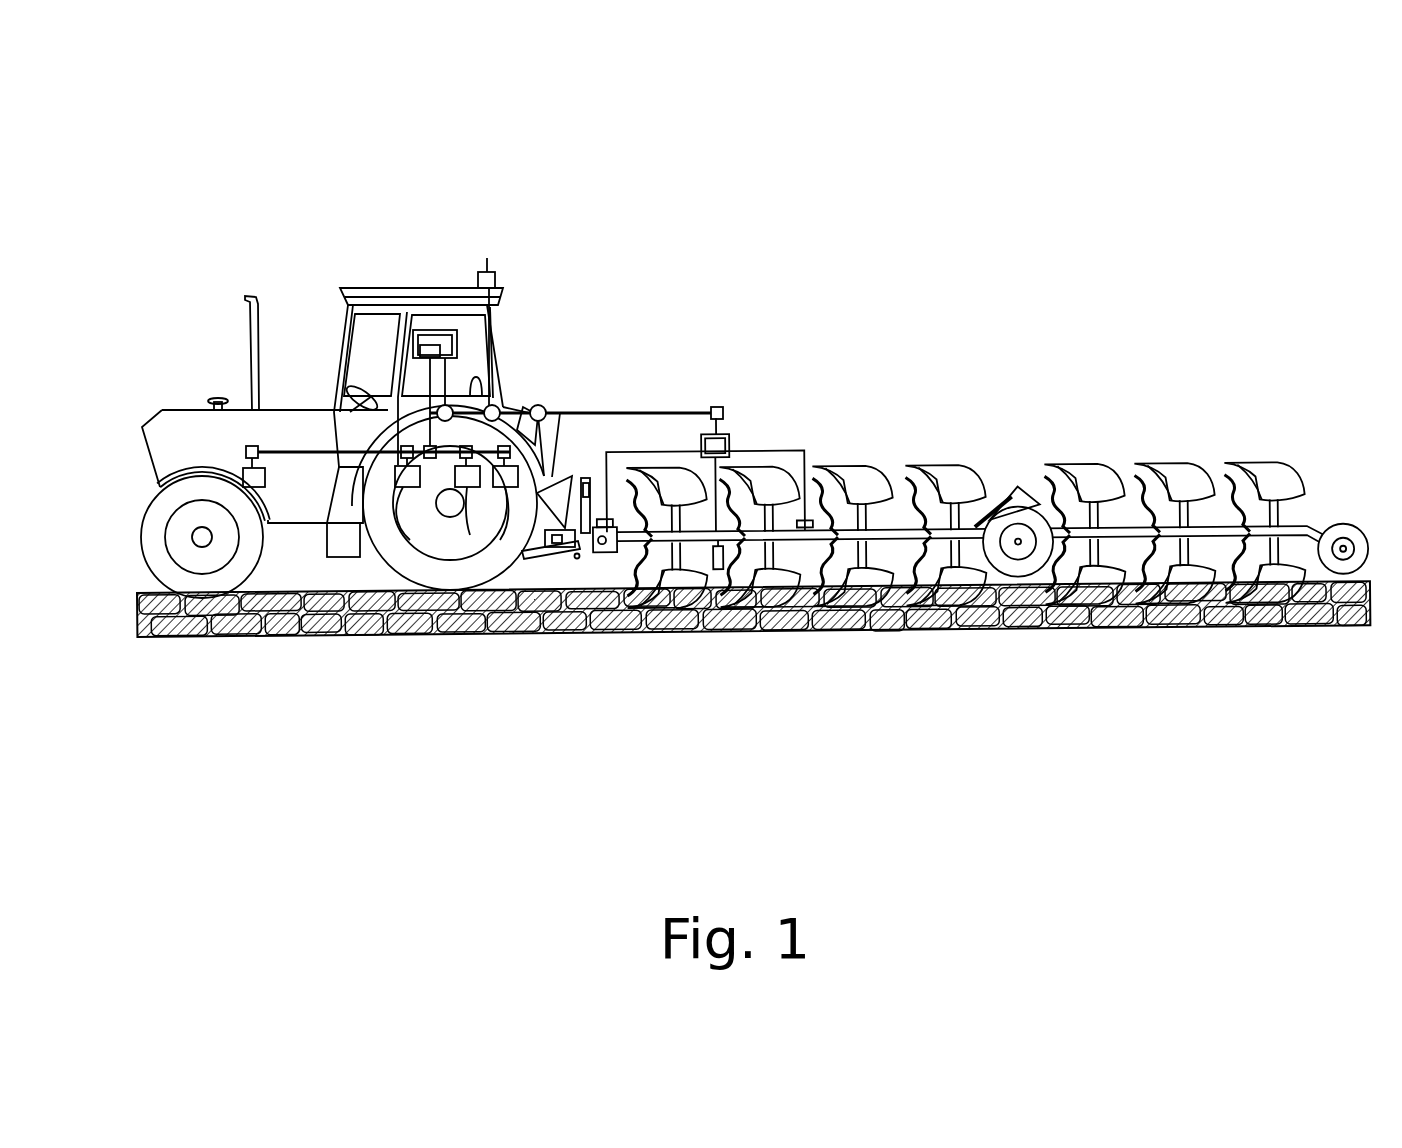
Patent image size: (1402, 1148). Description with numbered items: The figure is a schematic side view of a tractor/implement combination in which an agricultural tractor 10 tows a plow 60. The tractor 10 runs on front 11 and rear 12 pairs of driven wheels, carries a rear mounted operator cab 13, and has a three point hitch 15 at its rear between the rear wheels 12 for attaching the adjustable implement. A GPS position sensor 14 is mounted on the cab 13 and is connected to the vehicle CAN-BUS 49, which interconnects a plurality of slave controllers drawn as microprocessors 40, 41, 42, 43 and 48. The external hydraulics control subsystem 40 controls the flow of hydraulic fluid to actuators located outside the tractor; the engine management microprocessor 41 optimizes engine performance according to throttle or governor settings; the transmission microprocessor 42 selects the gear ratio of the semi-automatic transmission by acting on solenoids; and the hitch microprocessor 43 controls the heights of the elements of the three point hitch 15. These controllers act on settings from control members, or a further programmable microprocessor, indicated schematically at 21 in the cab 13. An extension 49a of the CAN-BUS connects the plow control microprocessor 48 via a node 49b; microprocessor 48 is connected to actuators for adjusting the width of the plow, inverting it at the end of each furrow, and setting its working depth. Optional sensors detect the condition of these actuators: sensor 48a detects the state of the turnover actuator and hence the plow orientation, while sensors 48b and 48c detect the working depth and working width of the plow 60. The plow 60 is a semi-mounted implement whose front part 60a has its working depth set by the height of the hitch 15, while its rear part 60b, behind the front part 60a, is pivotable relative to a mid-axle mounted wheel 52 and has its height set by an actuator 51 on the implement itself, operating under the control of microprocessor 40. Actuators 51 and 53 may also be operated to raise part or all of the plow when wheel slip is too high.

The agricultural tractor 10 is at (456, 258).
The front pair of driven wheels 11 is at (150, 541).
The rear pair of driven wheels 12 is at (423, 575).
The operator cab 13 is at (500, 348).
The GPS position sensor 14 is at (497, 278).
The three point hitch 15 is at (570, 480).
The programmable controller 21 is at (433, 330).
The external hydraulics control subsystem 40 is at (505, 548).
The engine management microprocessor 41 is at (247, 455).
The transmission microprocessor 42 is at (407, 533).
The hitch microprocessor 43 is at (466, 540).
The plow control microprocessor 48 is at (732, 442).
The plow turnover sensor 48a is at (600, 560).
The working depth sensor 48b is at (706, 580).
The working width sensor 48c is at (850, 478).
The vehicle CAN-BUS 49 is at (312, 452).
The CAN-BUS extension 49a is at (560, 413).
The node 49b is at (718, 405).
The actuator 51 is at (993, 497).
The mid-axle mounted wheel 52 is at (1030, 580).
The actuator 53 is at (592, 478).
The plow 60 is at (1147, 428).
The front part of the plow 60a is at (762, 594).
The rear part of the plow 60b is at (1025, 680).